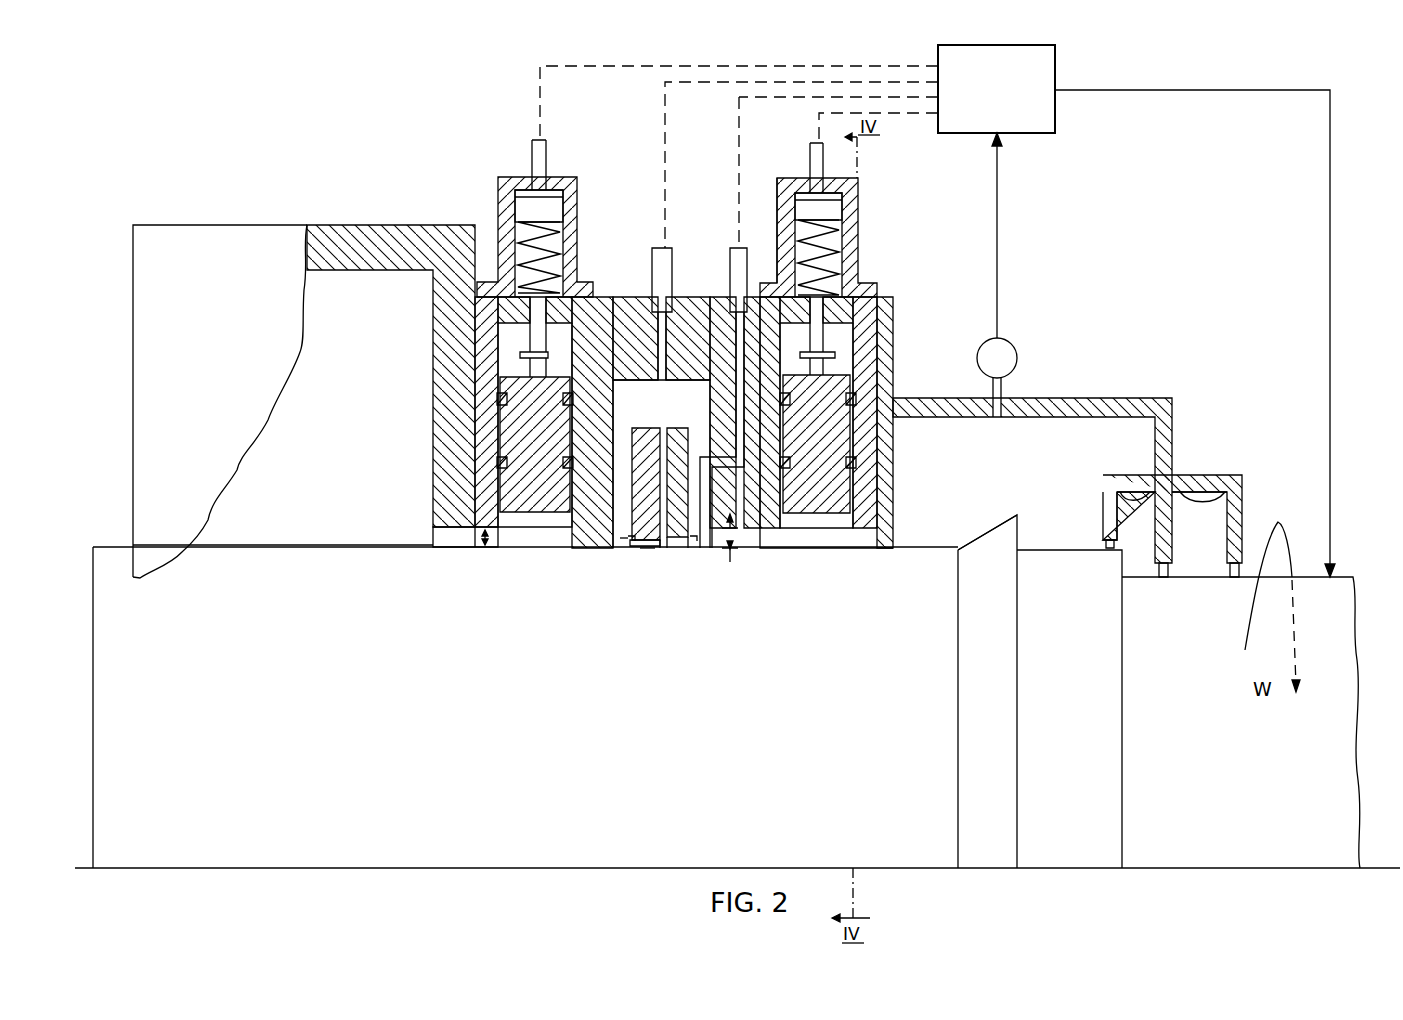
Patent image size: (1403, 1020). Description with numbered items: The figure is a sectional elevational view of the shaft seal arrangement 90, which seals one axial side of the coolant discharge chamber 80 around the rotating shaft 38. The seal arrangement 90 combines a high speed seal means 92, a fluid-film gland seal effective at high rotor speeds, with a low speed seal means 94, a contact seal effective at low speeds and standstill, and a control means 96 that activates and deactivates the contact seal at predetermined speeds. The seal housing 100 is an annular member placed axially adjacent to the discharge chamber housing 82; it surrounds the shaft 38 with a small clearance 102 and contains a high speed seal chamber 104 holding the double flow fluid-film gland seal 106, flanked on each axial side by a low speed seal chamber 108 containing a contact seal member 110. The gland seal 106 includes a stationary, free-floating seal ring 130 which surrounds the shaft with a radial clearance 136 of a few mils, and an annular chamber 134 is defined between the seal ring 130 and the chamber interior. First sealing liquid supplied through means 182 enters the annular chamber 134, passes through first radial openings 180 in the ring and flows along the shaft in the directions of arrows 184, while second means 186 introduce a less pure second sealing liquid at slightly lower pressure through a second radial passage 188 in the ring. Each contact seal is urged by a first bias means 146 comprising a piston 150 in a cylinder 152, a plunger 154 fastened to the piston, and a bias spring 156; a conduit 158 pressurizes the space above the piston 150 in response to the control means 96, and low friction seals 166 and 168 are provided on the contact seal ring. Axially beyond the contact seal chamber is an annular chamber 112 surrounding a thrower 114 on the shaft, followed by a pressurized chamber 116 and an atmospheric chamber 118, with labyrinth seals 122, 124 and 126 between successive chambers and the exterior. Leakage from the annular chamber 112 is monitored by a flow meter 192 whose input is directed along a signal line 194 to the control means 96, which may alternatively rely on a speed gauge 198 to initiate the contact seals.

The rotating shaft 38 is at (996, 796).
The discharge chamber 80 is at (358, 340).
The discharge chamber housing 82 is at (388, 227).
The shaft seal arrangement 90 is at (604, 159).
The high speed seal means 92 is at (625, 318).
The low speed seal means 94 is at (505, 230).
The control means 96 is at (1055, 58).
The seal housing 100 is at (672, 315).
The clearance 102 is at (484, 547).
The high speed seal chamber 104 is at (662, 380).
The double flow fluid-film gland seal 106 is at (660, 548).
The low speed seal chamber 108 is at (850, 343).
The contact seal member 110 is at (500, 398).
The annular chamber 112 is at (1070, 418).
The thrower 114 is at (985, 533).
The pressurized chamber 116 is at (1100, 512).
The atmospheric chamber 118 is at (1242, 492).
The labyrinth seal 122 is at (1107, 548).
The labyrinth seal 124 is at (1163, 578).
The labyrinth seal 126 is at (1232, 578).
The seal ring 130 is at (714, 548).
The annular chamber 134 is at (660, 422).
The radial clearance 136 is at (745, 550).
The first bias means 146 is at (838, 223).
The piston 150 is at (852, 205).
The cylinder 152 is at (792, 208).
The plunger 154 is at (820, 258).
The bias spring 156 is at (738, 250).
The conduit 158 is at (812, 150).
The low friction seal 166 is at (852, 395).
The low friction seal 168 is at (860, 465).
The first radial openings 180 is at (622, 540).
The first sealing liquid supply means 182 is at (670, 295).
The flow direction arrows 184 is at (653, 548).
The second means 186 is at (748, 315).
The second radial passage 188 is at (684, 548).
The flow meter 192 is at (1012, 344).
The signal line 194 is at (998, 270).
The gauge 198 is at (1340, 577).